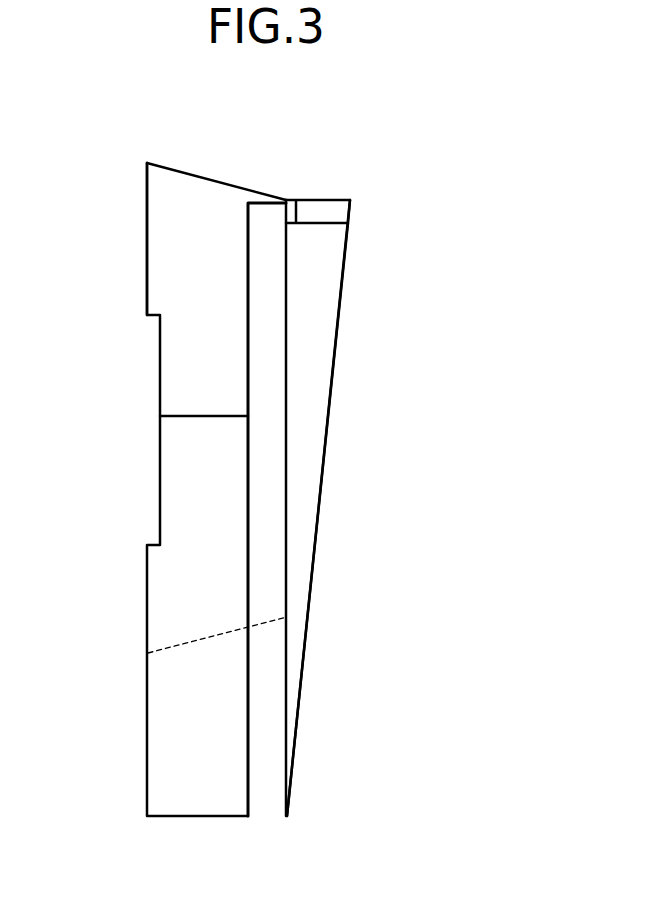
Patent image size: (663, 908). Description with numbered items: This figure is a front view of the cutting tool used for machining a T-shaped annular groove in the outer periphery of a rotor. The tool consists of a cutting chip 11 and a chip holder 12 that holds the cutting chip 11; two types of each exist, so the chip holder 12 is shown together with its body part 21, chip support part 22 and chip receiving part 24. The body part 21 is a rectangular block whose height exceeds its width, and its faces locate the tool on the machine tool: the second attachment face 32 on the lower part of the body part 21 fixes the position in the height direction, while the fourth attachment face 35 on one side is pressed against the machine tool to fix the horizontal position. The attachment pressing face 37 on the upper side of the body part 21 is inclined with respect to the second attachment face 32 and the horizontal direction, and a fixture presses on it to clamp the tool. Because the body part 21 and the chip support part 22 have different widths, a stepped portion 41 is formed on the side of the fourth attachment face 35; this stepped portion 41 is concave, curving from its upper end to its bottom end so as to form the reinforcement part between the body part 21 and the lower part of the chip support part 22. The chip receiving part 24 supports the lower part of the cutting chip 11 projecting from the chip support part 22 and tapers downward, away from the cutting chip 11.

The cutting chip 11 is at (320, 217).
The chip holder 12 is at (350, 317).
The body part 21 is at (138, 248).
The chip support part 22 is at (297, 374).
The chip receiving part 24 is at (336, 491).
The second attachment face 32 is at (265, 621).
The fourth attachment face 35 is at (147, 287).
The attachment pressing face 37 is at (238, 186).
The stepped portion 41 is at (200, 211).